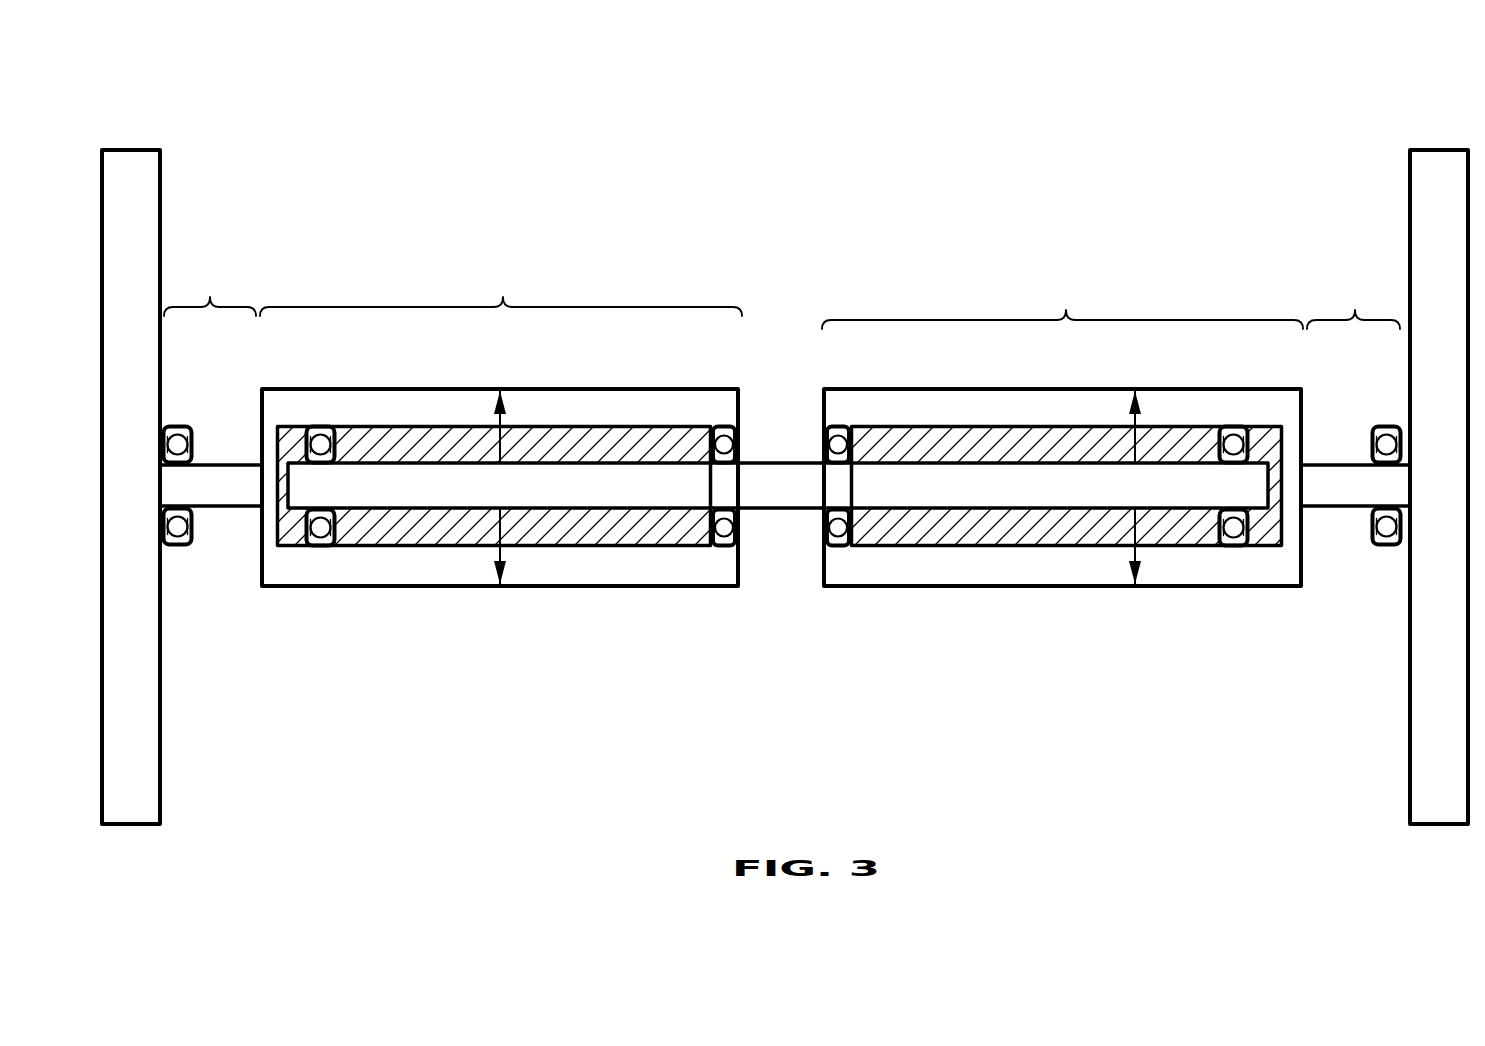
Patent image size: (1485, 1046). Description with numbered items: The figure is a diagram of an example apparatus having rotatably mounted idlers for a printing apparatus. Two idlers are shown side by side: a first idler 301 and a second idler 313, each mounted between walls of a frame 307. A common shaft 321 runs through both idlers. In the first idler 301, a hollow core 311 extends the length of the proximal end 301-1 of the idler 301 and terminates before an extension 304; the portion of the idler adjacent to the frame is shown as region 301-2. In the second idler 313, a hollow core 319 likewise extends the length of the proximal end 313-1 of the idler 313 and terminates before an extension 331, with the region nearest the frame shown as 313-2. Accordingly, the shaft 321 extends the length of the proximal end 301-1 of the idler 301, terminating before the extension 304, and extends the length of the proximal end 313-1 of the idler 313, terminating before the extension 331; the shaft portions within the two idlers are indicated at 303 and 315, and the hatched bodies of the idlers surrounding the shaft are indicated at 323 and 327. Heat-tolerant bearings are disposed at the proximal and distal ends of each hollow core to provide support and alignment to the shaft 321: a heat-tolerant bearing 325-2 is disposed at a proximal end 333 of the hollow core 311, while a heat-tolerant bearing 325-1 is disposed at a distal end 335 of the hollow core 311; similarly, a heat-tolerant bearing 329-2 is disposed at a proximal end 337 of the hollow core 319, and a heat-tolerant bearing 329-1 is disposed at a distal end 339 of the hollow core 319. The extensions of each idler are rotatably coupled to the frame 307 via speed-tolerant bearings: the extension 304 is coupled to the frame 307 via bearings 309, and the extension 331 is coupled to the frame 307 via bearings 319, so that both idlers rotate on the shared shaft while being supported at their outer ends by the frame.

The idler 301 is at (360, 387).
The proximal end of idler 301-1 is at (501, 292).
The second portion of first housing 301-2 is at (210, 292).
The first shaft 303 is at (514, 485).
The extension 304 is at (223, 508).
The frame 307 is at (115, 148).
The bearings 309 is at (173, 546).
The hollow core 311 is at (670, 538).
The idler 313 is at (1253, 387).
The proximal end of idler 313-1 is at (1062, 304).
The second portion of second housing 313-2 is at (1353, 304).
The second shaft 315 is at (1045, 485).
The hollow core 319 is at (881, 538).
The shaft 321 is at (785, 463).
The first rotor 323 is at (673, 425).
The heat-tolerant bearing 325-1 is at (312, 548).
The heat-tolerant bearing 325-2 is at (722, 550).
The second rotor 327 is at (1022, 425).
The heat-tolerant bearing 329-1 is at (1230, 550).
The heat-tolerant bearing 329-2 is at (835, 550).
The extension 331 is at (1328, 508).
The proximal end of hollow core 333 is at (749, 530).
The distal end of hollow core 335 is at (274, 529).
The proximal end of hollow core 337 is at (816, 530).
The distal end of hollow core 339 is at (1289, 533).